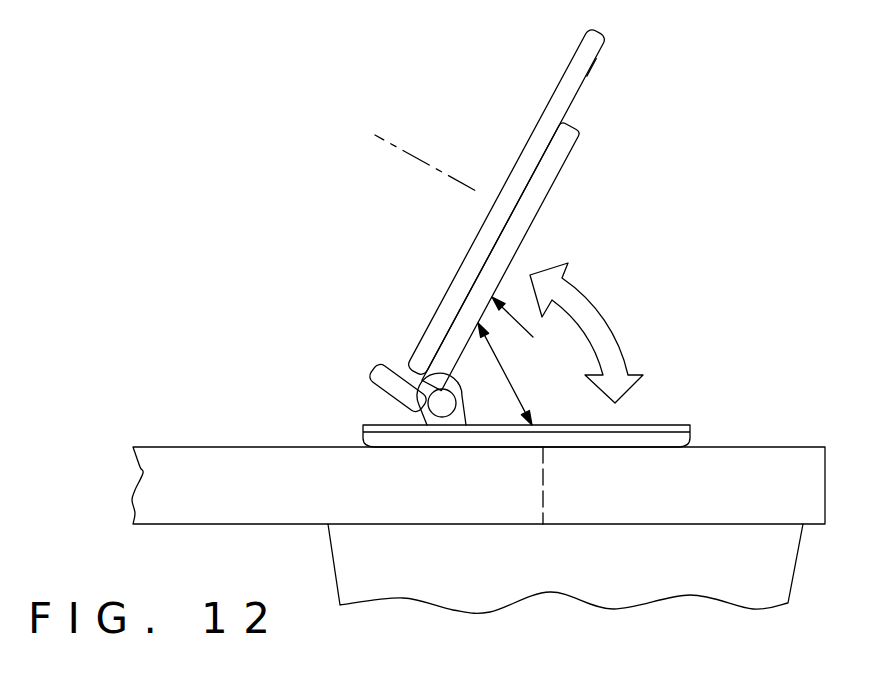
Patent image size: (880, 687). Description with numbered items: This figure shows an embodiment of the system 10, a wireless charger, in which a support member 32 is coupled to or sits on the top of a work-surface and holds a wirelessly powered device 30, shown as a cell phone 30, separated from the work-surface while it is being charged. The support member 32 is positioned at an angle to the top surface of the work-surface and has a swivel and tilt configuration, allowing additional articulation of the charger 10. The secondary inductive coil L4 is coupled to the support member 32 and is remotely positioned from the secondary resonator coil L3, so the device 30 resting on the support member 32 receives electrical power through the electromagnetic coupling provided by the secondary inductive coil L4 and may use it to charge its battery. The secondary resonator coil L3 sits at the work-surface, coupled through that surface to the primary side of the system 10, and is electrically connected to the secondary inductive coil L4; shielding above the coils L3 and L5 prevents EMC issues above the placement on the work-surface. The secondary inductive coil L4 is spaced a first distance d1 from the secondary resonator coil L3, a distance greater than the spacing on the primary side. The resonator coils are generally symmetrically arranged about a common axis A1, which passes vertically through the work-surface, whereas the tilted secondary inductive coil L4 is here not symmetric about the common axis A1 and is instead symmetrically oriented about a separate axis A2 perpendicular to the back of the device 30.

The system 10 is at (607, 361).
The wirelessly powered device 30 is at (582, 85).
The support member 32 is at (552, 188).
The secondary resonator coil L3 is at (711, 435).
The coil L5 is at (607, 418).
The secondary inductive coil L4 is at (527, 332).
The first distance d1 is at (507, 383).
The common axis A1 is at (543, 491).
The axis A2 is at (425, 163).